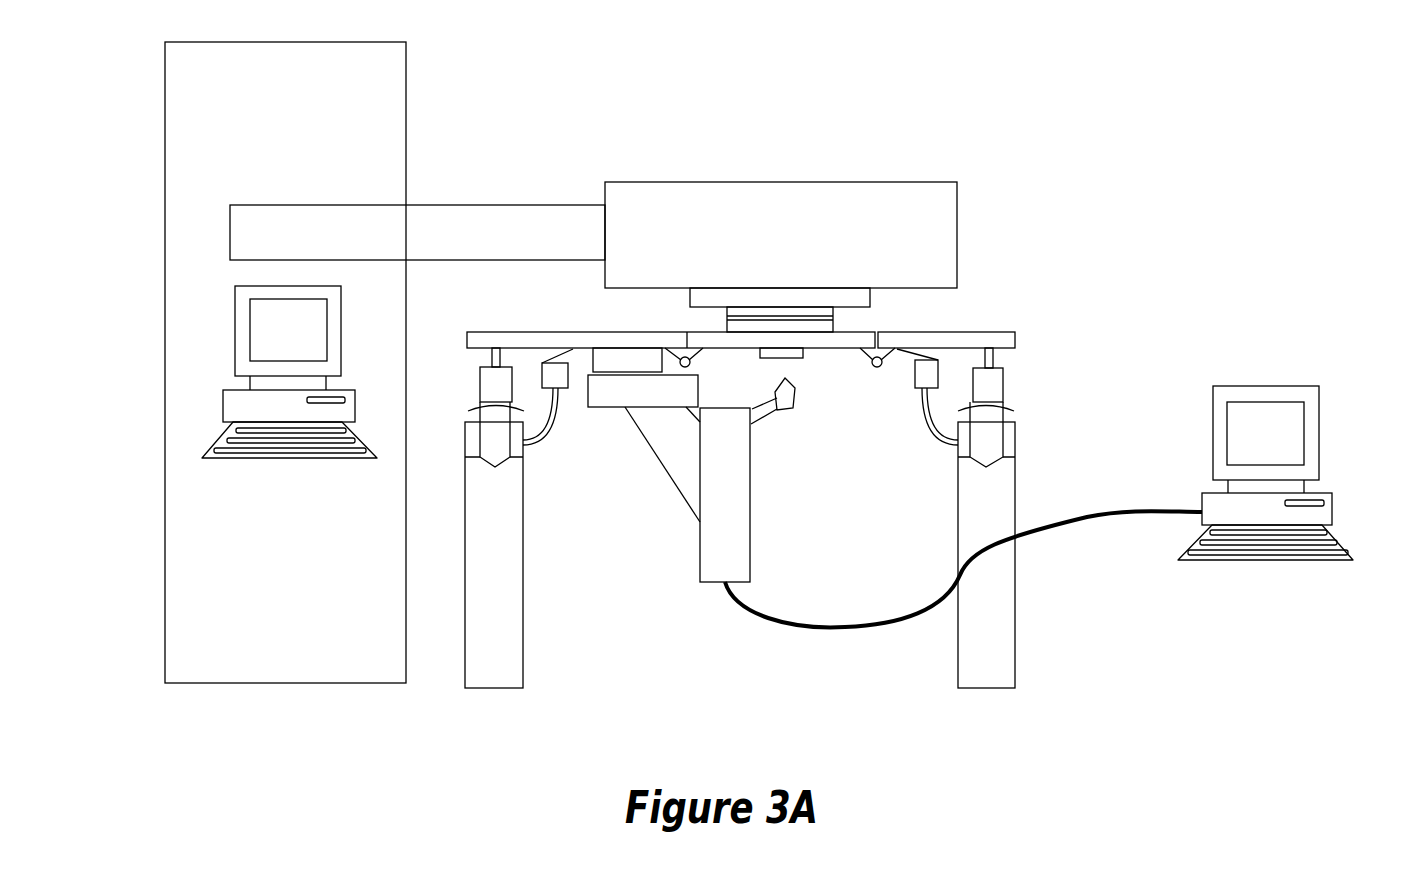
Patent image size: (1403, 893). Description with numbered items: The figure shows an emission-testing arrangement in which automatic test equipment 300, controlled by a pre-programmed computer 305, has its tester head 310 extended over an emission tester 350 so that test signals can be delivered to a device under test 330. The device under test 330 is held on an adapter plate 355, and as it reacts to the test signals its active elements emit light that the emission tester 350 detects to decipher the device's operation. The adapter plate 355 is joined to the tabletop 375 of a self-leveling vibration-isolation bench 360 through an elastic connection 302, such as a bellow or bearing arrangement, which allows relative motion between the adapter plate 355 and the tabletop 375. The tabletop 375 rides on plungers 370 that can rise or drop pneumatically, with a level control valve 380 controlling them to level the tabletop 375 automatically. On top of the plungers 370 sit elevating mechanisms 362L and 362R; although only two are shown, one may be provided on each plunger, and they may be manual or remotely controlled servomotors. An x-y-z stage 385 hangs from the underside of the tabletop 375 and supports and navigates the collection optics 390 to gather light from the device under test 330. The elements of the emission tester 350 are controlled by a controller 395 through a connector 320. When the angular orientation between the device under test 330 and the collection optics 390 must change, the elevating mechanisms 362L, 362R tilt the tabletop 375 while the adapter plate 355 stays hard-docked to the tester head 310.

The automatic test equipment 300 is at (261, 130).
The pre-programmed computer 305 is at (265, 344).
The tester head 310 is at (747, 250).
The elastic connection 302 is at (877, 370).
The connector 320 is at (1041, 525).
The device under test 330 is at (800, 359).
The emission tester 350 is at (1063, 260).
The adapter plate 355 is at (695, 332).
The self-leveling vibration-isolation bench 360 is at (1047, 316).
The left elevating mechanism 362L is at (502, 381).
The right elevating mechanism 362R is at (1000, 374).
The plunger 370 is at (493, 434).
The tabletop 375 is at (548, 333).
The level control valve 380 is at (563, 391).
The x-y-z stage 385 is at (643, 379).
The collection optics 390 is at (788, 413).
The controller 395 is at (1265, 473).